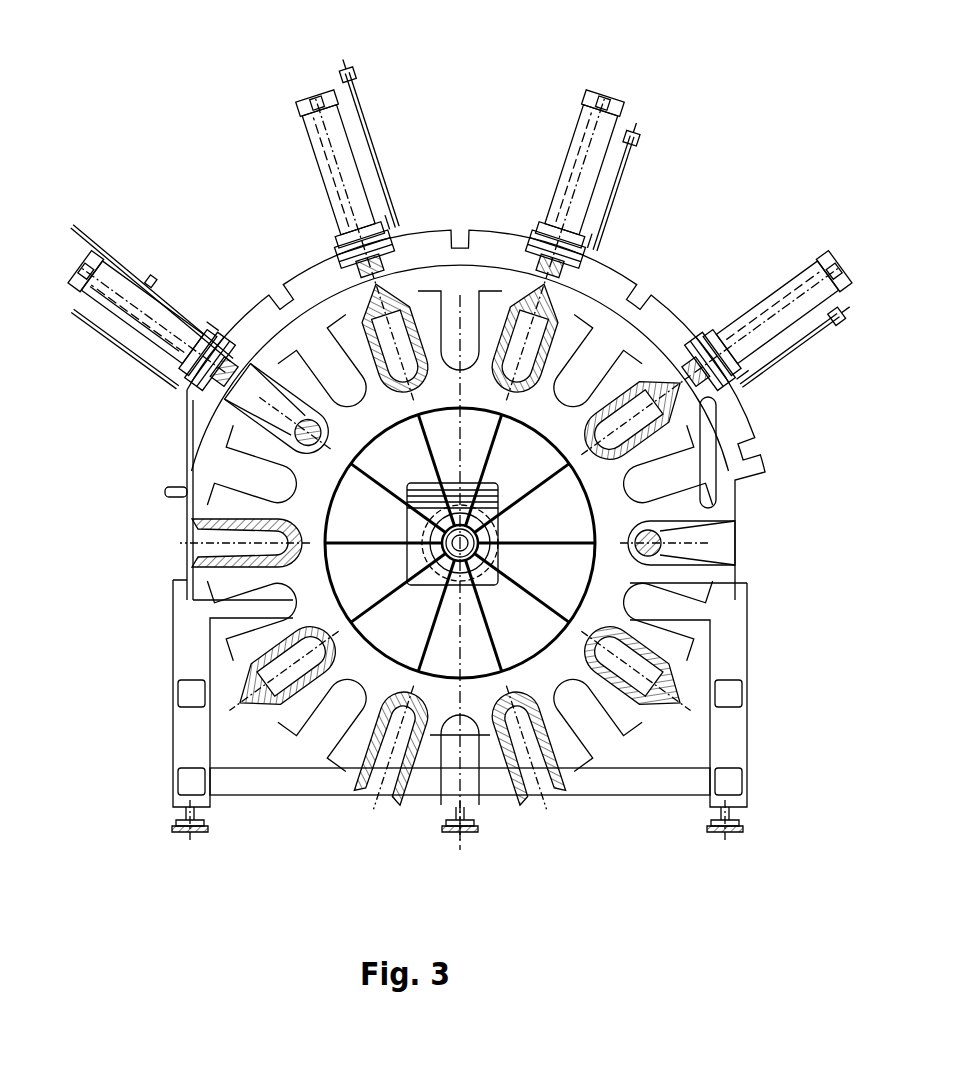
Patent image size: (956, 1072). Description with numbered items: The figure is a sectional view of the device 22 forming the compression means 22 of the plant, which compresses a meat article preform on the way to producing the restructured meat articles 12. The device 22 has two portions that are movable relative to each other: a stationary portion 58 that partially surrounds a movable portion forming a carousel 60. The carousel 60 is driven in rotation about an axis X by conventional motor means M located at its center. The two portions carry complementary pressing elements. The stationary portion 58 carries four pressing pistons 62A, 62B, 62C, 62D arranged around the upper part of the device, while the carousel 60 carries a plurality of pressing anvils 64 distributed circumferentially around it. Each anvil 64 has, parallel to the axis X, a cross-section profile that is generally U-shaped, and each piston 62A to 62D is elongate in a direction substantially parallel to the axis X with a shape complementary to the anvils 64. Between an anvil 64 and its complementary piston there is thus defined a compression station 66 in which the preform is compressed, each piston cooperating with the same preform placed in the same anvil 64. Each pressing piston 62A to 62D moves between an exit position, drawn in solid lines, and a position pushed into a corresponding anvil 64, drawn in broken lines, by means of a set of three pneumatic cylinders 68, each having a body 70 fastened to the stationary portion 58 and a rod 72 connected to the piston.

The compression means 22 is at (498, 88).
The stationary portion 58 is at (492, 224).
The carousel 60 is at (640, 342).
The pressing piston 62A is at (216, 340).
The pressing piston 62B is at (396, 246).
The pressing piston 62C is at (588, 270).
The pressing piston 62D is at (702, 336).
The pressing anvil 64 is at (362, 770).
The compression station 66 is at (400, 392).
The pneumatic cylinder 68 is at (106, 266).
The cylinder body 70 is at (150, 312).
The cylinder rod 72 is at (188, 372).
The restructured meat article 12 is at (684, 547).
The axis of rotation X is at (482, 540).
The motor means M is at (437, 578).